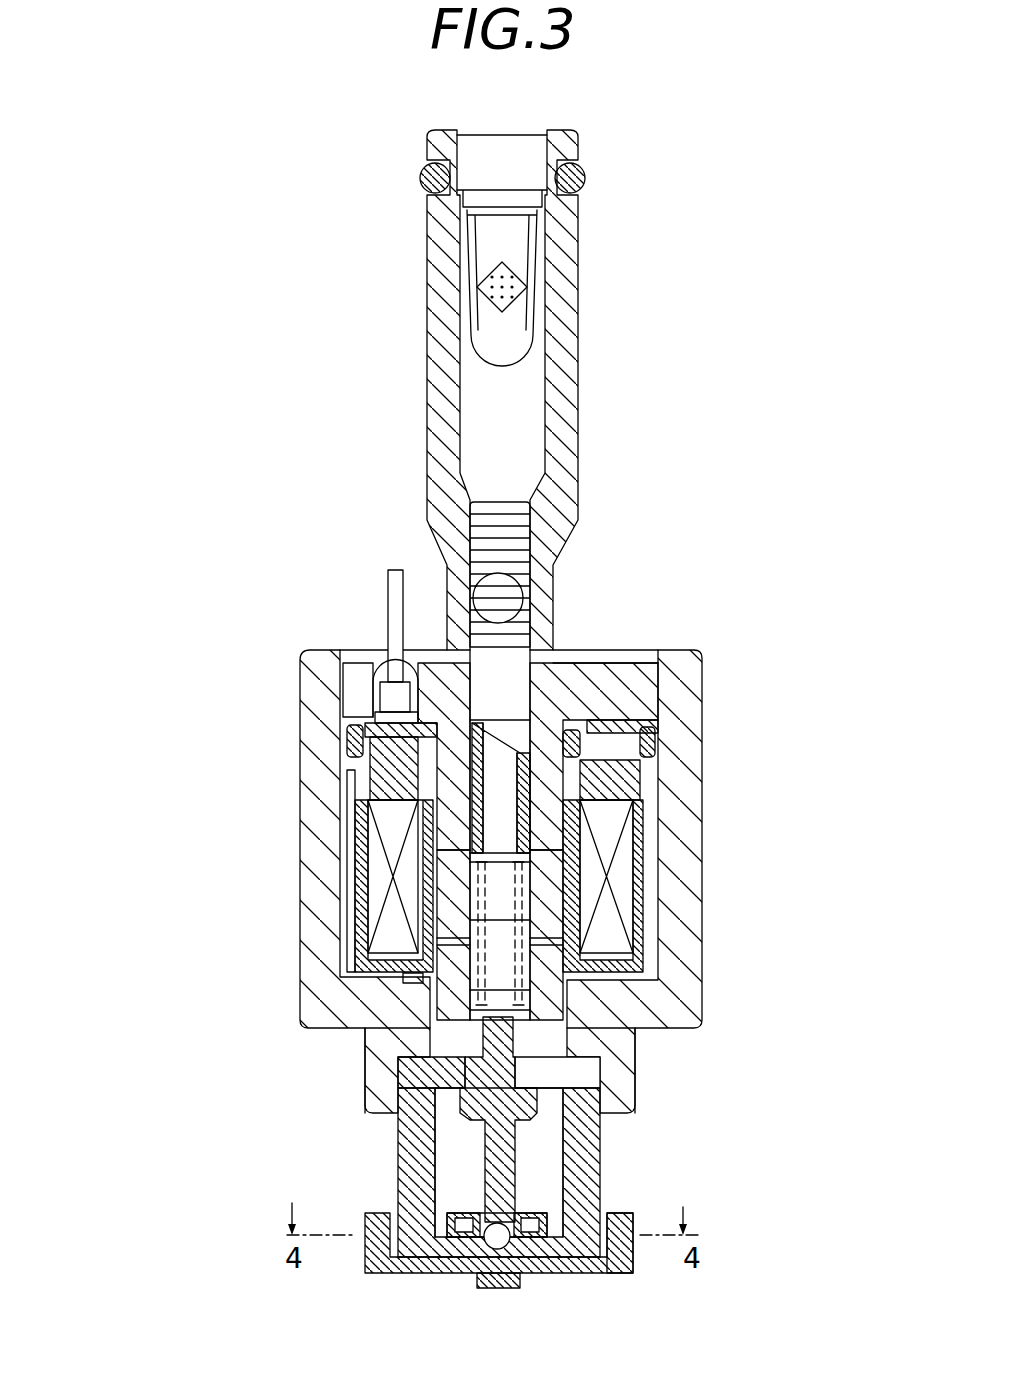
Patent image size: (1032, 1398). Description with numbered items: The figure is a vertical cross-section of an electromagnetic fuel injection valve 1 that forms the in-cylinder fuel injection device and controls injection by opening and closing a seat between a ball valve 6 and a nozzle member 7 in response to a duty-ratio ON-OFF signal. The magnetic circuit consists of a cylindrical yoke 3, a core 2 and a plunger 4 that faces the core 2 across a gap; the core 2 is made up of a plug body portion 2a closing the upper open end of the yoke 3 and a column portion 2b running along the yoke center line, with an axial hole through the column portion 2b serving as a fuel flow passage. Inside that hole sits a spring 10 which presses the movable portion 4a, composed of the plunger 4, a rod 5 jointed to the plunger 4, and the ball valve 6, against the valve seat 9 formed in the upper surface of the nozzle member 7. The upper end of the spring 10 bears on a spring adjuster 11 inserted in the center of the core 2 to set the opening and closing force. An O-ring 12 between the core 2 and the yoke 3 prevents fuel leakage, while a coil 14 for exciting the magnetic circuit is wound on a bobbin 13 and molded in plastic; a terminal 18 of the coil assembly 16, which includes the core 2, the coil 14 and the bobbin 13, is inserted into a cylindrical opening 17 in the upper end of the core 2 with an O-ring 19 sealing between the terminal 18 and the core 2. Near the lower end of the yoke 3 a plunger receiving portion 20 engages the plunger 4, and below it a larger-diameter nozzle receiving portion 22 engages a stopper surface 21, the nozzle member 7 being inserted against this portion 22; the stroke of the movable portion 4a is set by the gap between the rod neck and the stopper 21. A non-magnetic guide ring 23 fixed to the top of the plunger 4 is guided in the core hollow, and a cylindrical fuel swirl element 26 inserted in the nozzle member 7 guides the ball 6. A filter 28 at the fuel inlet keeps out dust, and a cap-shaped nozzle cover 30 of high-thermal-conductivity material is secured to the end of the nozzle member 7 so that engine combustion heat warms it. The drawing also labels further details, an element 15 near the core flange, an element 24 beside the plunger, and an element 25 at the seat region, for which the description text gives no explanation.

The electromagnetic fuel injection valve 1 is at (585, 311).
The core 2 is at (675, 684).
The plug body portion 2a is at (612, 660).
The column portion 2b is at (540, 877).
The cylindrical yoke 3 is at (305, 650).
The plunger 4 is at (680, 1030).
The movable portion 4a is at (545, 1178).
The rod 5 is at (447, 1152).
The ball valve 6 is at (490, 1235).
The nozzle member 7 is at (600, 1140).
The valve seat 9 is at (467, 1270).
The spring 10 is at (530, 915).
The spring adjuster 11 is at (520, 703).
The O-ring 12 is at (345, 742).
The bobbin 13 is at (360, 790).
The coil 14 is at (368, 850).
The O-ring 15 is at (580, 765).
The coil assembly 16 is at (350, 893).
The cylindrical opening 17 is at (358, 695).
The terminal 18 is at (394, 588).
The O-ring 19 is at (380, 702).
The plunger receiving portion 20 is at (410, 1030).
The stopper surface 21 is at (398, 1075).
The nozzle receiving portion 22 is at (583, 1075).
The guide ring 23 is at (513, 963).
The shim 24 is at (447, 940).
The seat plate 25 is at (567, 1212).
The cylindrical fuel swirl element 26 is at (385, 1273).
The filter 28 is at (482, 258).
The nozzle cover 30 is at (607, 1275).